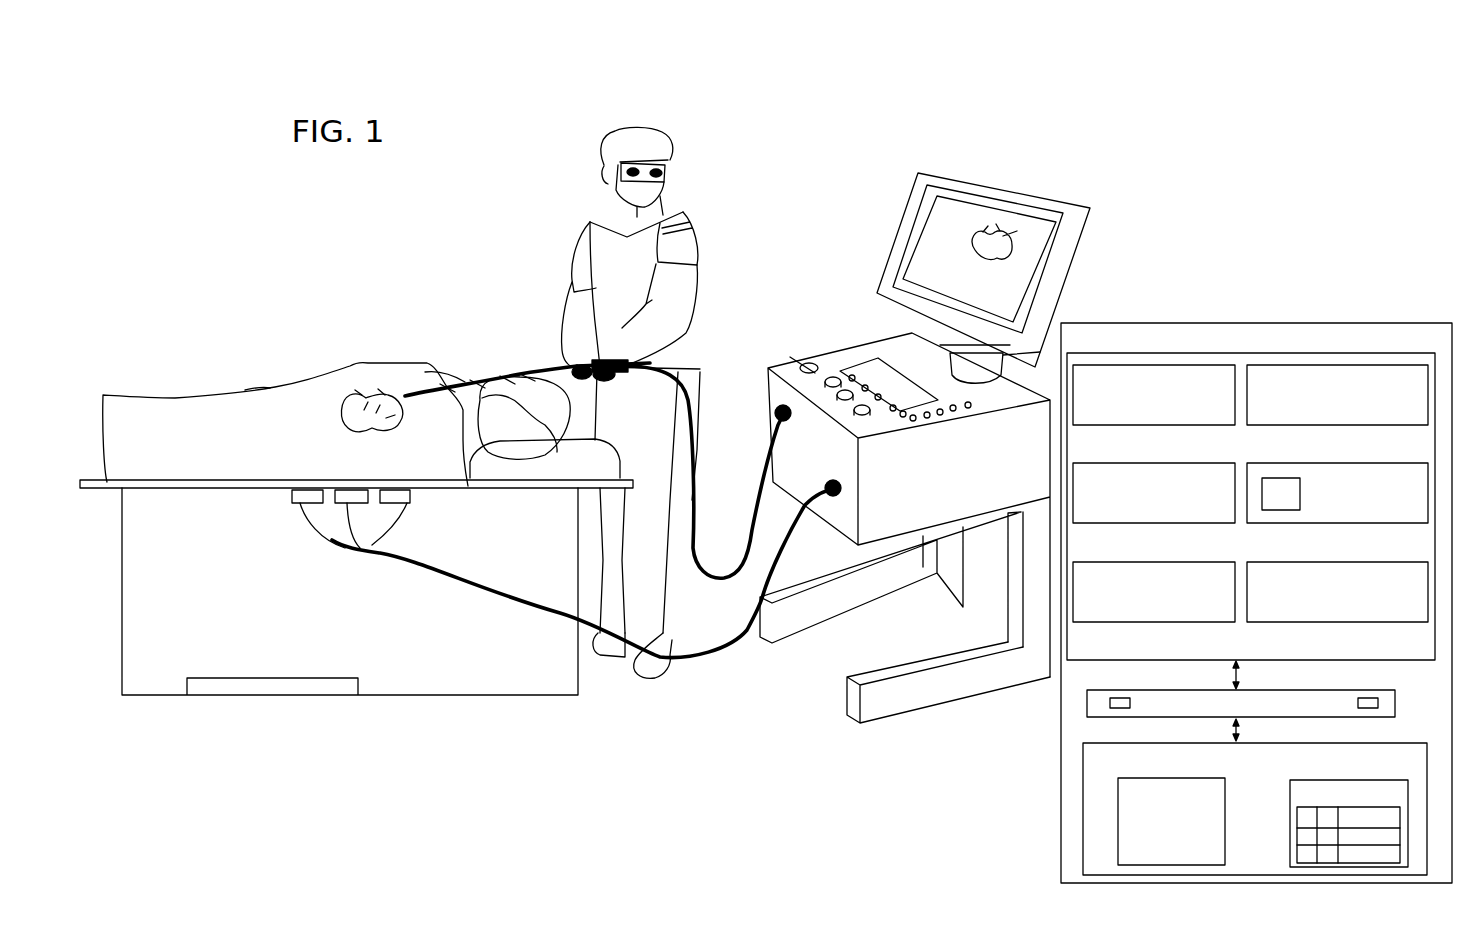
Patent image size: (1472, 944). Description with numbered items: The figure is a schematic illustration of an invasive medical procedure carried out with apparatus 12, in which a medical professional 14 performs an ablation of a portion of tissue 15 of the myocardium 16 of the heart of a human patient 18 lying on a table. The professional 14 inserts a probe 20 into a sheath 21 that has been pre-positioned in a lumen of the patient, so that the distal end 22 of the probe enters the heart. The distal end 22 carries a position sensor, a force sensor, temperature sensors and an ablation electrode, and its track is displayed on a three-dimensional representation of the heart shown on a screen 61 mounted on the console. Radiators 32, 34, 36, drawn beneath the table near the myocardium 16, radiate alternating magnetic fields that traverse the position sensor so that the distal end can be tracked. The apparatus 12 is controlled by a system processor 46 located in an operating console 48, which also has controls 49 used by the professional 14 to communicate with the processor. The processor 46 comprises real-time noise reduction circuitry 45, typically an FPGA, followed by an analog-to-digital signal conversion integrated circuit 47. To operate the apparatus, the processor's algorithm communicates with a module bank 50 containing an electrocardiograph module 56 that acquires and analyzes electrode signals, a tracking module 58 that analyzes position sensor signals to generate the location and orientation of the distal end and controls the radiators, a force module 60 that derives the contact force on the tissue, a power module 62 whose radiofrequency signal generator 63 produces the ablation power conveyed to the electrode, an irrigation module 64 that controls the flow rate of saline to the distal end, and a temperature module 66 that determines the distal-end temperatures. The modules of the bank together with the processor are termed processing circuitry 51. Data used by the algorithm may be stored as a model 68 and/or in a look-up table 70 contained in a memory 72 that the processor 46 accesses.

The apparatus 12 is at (786, 160).
The medical professional 14 is at (638, 138).
The tissue 15 is at (330, 330).
The myocardium 16 is at (357, 367).
The patient 18 is at (162, 397).
The probe 20 is at (467, 380).
The sheath 21 is at (427, 367).
The distal end 22 is at (395, 330).
The radiator 32 is at (298, 505).
The radiator 34 is at (340, 505).
The radiator 36 is at (407, 505).
The real-time noise reduction circuitry 45 is at (1122, 698).
The system processor 46 is at (1133, 717).
The analog-to-digital signal conversion integrated circuit 47 is at (1368, 698).
The operating console 48 is at (845, 360).
The controls 49 is at (810, 362).
The module bank 50 is at (1078, 662).
The processing circuitry 51 is at (1003, 766).
The electrocardiograph (ECG) module 56 is at (1122, 365).
The tracking module 58 is at (1412, 365).
The force module 60 is at (973, 230).
The screen 61 is at (1083, 238).
The power module 62 is at (1352, 462).
The radiofrequency (RF) signal generator 63 is at (1280, 478).
The irrigation module 64 is at (1165, 562).
The temperature module 66 is at (1345, 562).
The model 68 is at (1163, 778).
The look-up table 70 is at (1340, 780).
The memory 72 is at (1420, 743).